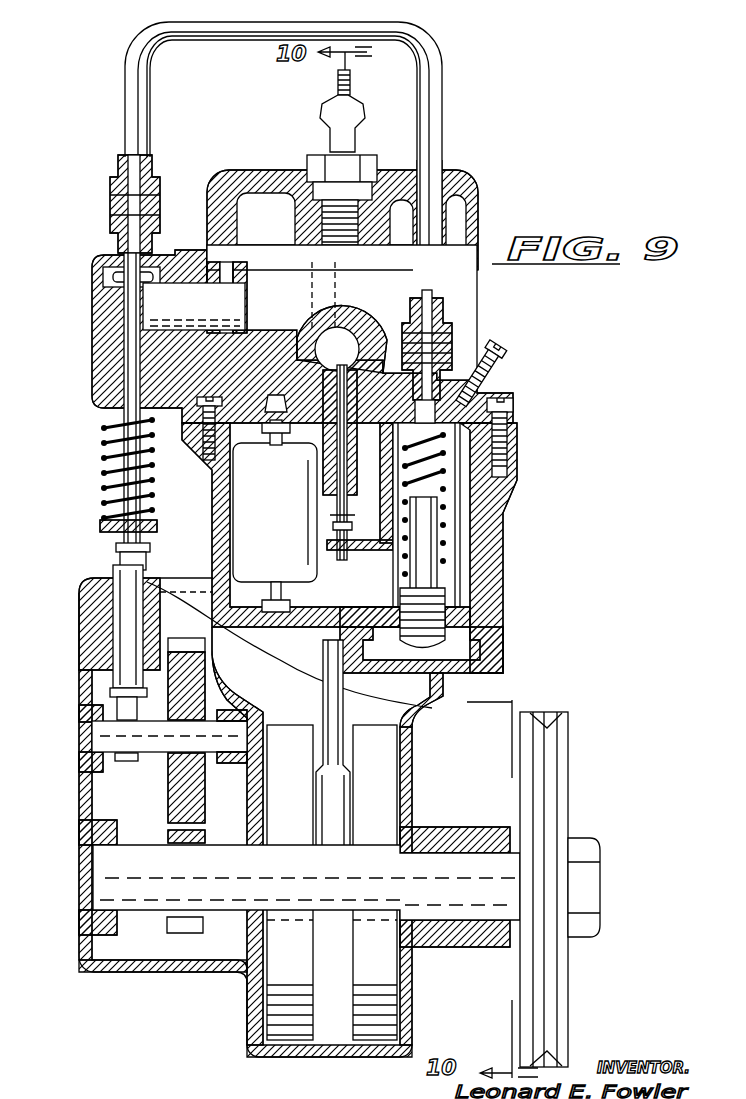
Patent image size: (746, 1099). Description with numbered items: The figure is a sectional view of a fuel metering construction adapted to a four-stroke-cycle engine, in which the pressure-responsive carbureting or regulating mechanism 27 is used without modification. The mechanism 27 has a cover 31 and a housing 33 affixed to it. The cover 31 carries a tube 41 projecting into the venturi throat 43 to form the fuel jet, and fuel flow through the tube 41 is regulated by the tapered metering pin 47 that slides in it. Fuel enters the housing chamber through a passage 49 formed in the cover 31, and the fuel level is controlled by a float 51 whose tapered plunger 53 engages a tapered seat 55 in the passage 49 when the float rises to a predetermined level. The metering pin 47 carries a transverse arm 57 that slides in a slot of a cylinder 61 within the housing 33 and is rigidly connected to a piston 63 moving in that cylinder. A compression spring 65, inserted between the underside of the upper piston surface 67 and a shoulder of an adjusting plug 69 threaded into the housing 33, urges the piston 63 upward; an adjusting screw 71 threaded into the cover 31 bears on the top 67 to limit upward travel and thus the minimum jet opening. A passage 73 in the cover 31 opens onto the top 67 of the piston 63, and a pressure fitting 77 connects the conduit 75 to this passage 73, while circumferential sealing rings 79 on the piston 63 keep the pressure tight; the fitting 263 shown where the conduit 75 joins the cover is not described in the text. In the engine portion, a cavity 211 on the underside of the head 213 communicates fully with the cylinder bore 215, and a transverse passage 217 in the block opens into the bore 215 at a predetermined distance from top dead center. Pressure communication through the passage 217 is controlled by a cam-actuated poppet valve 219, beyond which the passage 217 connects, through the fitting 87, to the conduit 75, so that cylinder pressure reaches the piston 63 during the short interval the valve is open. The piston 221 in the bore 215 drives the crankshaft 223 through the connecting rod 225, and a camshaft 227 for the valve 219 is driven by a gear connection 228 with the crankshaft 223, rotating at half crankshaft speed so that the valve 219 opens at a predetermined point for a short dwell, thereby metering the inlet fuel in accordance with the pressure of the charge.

The pressure-responsive carbureting or regulating mechanism 27 is at (510, 359).
The cover 31 is at (490, 398).
The housing 33 is at (290, 612).
The tube 41 is at (337, 349).
The venturi throat 43 is at (338, 328).
The tapered metering pin 47 is at (333, 512).
The passage 49 is at (238, 368).
The float 51 is at (286, 526).
The tapered plunger 53 is at (262, 441).
The tapered seat 55 is at (281, 404).
The transverse arm 57 is at (367, 552).
The cylinder 61 is at (490, 511).
The piston 63 is at (463, 482).
The compression spring 65 is at (443, 556).
The upper piston surface 67 is at (393, 439).
The adjusting plug 69 is at (457, 596).
The adjusting screw 71 is at (488, 365).
The passage 73 is at (418, 401).
The conduit 75 is at (147, 132).
The pressure fitting 77 is at (452, 357).
The circumferential sealing rings 79 is at (507, 458).
The fitting 87 is at (158, 210).
The cavity 211 is at (312, 264).
The head 213 is at (458, 185).
The cylinder bore 215 is at (248, 288).
The transverse passage 217 is at (247, 304).
The cam-actuated poppet valve 219 is at (158, 255).
The piston 221 is at (247, 321).
The crankshaft 223 is at (187, 887).
The connecting rod 225 is at (343, 820).
The camshaft 227 is at (149, 775).
The gear connection 228 is at (195, 643).
The tube fitting 263 is at (463, 310).